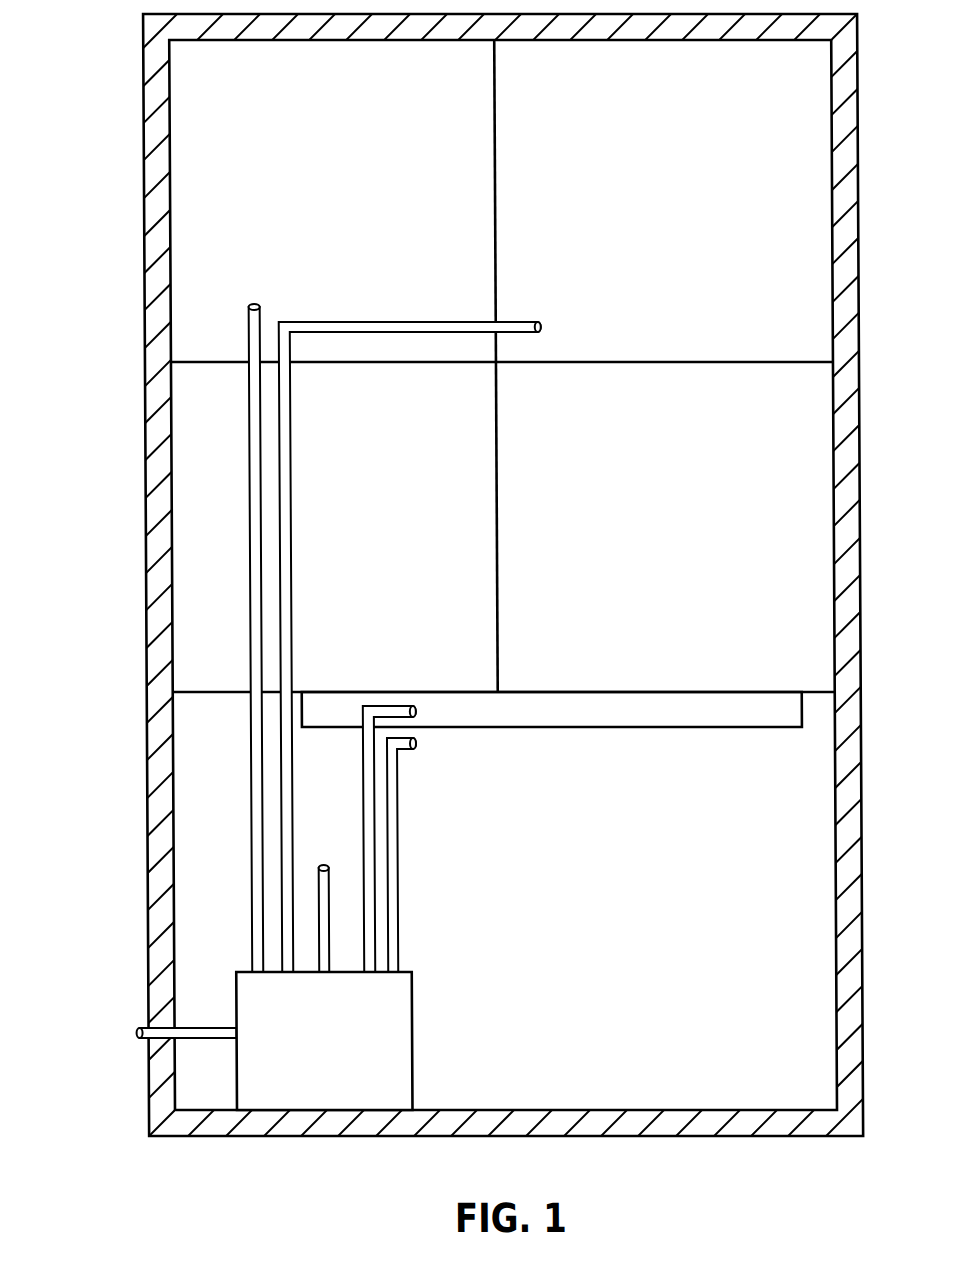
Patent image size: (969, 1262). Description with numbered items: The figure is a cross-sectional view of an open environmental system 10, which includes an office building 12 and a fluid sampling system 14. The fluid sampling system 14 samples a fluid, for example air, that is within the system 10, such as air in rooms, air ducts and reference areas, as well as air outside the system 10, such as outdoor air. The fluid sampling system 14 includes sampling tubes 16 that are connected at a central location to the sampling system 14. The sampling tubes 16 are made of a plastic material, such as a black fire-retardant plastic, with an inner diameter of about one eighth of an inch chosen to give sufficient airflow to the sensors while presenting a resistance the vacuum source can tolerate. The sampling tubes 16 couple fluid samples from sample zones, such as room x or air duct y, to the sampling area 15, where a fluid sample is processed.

The open environmental system 10 is at (475, 578).
The office building 12 is at (858, 562).
The fluid sampling system 14 is at (339, 707).
The sampling area 15 is at (401, 1053).
The sampling tubes 16 is at (382, 812).